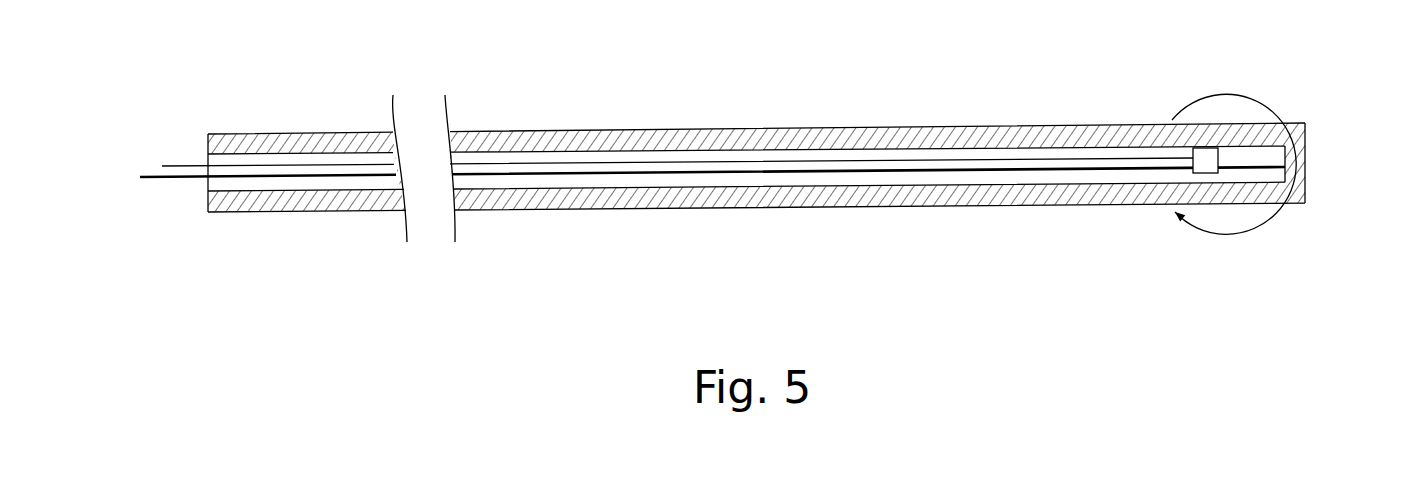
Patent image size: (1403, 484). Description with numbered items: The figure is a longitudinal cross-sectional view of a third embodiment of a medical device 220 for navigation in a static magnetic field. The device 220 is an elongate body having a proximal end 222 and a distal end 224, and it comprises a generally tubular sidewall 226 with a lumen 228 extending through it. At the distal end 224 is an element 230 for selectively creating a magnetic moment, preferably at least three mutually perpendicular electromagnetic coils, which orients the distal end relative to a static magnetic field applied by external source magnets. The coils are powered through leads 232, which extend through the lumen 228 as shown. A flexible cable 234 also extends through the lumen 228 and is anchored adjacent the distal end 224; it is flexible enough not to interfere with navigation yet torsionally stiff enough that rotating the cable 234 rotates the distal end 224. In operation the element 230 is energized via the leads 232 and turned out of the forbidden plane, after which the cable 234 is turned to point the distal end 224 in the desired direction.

The medical device 220 is at (752, 180).
The proximal end 222 is at (190, 203).
The distal end 224 is at (1313, 132).
The tubular sidewall 226 is at (805, 133).
The lumen 228 is at (958, 177).
The element for selectively creating a magnetic moment 230 is at (1203, 173).
The leads 232 is at (1003, 159).
The flexible cable 234 is at (592, 176).